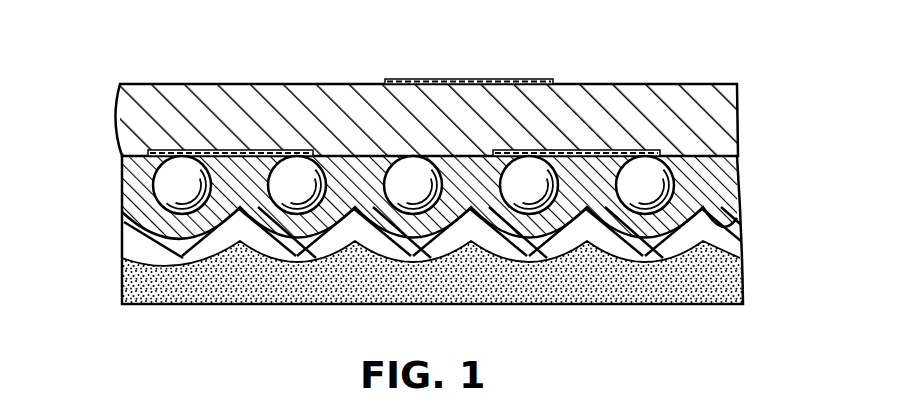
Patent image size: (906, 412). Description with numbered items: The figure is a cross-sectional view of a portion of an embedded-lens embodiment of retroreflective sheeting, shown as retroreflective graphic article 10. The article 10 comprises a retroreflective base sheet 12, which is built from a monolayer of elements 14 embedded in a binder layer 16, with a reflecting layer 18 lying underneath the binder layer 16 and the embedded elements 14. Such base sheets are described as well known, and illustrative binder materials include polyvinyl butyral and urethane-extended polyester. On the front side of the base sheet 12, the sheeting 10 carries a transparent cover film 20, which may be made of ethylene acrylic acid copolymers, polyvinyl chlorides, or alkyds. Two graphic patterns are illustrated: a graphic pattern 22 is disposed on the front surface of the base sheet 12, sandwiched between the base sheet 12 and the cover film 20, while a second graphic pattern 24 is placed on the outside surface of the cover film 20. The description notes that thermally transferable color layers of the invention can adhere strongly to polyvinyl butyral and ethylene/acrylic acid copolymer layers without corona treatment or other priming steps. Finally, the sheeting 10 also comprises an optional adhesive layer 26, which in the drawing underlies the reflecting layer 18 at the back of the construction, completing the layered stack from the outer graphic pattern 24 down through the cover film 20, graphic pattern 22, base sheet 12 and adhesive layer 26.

The retroreflective graphic article 10 is at (692, 61).
The retroreflective base sheet 12 is at (752, 158).
The elements 14 is at (638, 182).
The binder layer 16 is at (135, 183).
The reflecting layer 18 is at (140, 238).
The transparent cover film 20 is at (135, 100).
The graphic pattern 22 is at (243, 150).
The graphic pattern 24 is at (413, 80).
The adhesive layer 26 is at (189, 290).